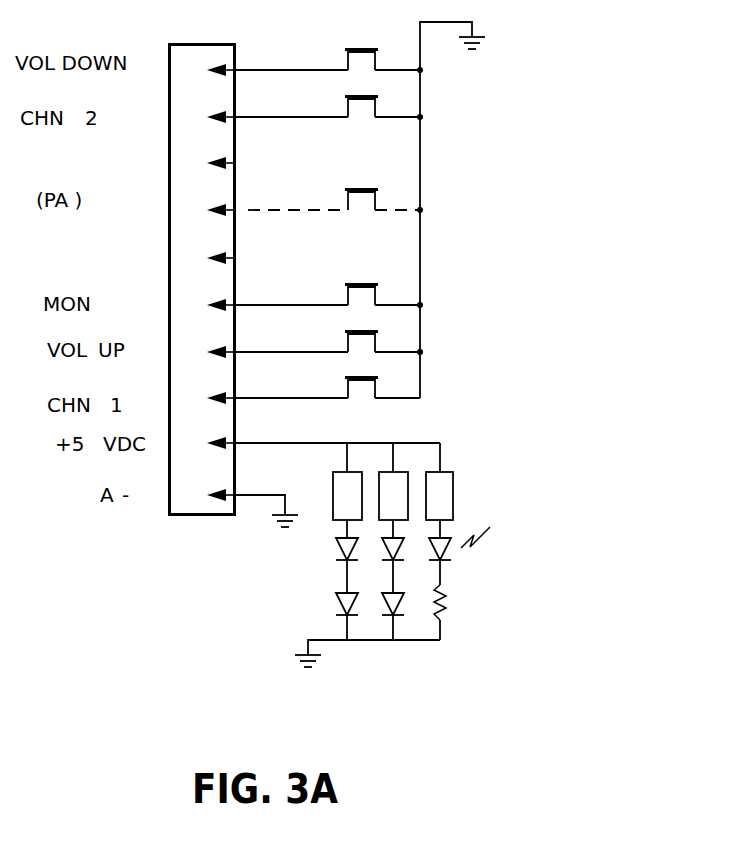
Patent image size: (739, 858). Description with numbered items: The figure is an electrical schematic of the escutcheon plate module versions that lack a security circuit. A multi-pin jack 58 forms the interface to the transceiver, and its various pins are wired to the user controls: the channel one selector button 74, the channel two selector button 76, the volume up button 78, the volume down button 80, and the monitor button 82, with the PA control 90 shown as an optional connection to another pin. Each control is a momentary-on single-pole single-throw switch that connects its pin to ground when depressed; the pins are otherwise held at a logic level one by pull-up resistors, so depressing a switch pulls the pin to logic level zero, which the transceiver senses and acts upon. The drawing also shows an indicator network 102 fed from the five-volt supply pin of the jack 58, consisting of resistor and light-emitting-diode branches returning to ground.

The jack 58 is at (193, 515).
The channel 1 selector button 74 is at (347, 393).
The channel 2 selector button 76 is at (348, 108).
The volume up button 78 is at (348, 343).
The volume down button 80 is at (348, 60).
The monitor button 82 is at (348, 294).
The PA control 90 is at (348, 202).
The LED indicator circuit 102 is at (314, 568).